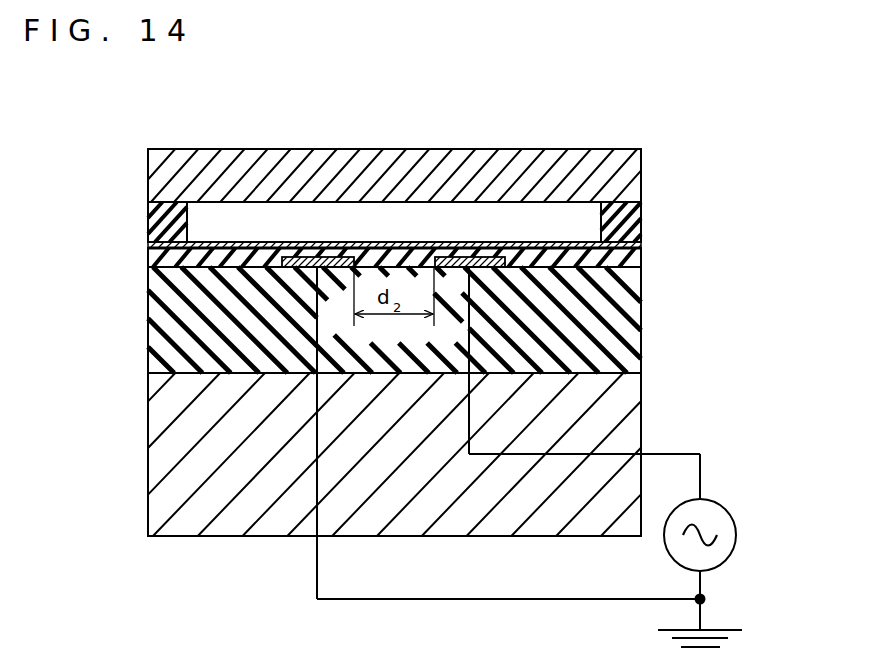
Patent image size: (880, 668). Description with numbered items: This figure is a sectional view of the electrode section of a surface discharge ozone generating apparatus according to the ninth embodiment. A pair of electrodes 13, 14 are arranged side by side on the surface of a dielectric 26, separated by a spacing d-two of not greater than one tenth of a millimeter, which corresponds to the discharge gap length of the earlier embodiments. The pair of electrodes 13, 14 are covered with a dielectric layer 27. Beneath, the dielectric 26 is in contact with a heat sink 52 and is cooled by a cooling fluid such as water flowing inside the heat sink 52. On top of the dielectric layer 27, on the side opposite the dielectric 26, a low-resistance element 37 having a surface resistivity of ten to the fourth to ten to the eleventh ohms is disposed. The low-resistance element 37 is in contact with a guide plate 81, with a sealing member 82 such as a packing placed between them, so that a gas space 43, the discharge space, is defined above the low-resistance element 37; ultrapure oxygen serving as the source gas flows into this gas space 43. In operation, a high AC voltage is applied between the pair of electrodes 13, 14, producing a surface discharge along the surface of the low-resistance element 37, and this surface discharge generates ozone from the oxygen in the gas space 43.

The guide plate 81 is at (573, 149).
The sealing member 82 is at (645, 208).
The gas space 43 is at (226, 218).
The low-resistance element 37 is at (147, 244).
The dielectric layer 27 is at (643, 256).
The electrode 13 is at (310, 257).
The electrode 14 is at (489, 257).
The dielectric 26 is at (147, 316).
The heat sink 52 is at (147, 452).